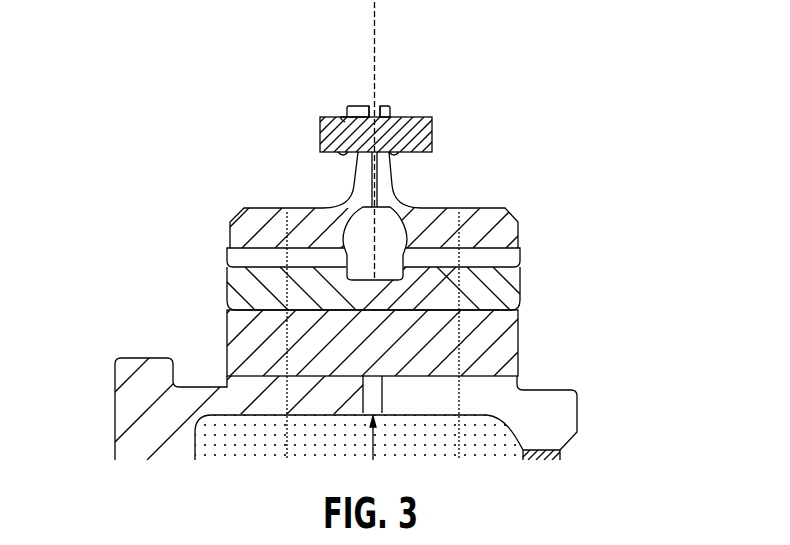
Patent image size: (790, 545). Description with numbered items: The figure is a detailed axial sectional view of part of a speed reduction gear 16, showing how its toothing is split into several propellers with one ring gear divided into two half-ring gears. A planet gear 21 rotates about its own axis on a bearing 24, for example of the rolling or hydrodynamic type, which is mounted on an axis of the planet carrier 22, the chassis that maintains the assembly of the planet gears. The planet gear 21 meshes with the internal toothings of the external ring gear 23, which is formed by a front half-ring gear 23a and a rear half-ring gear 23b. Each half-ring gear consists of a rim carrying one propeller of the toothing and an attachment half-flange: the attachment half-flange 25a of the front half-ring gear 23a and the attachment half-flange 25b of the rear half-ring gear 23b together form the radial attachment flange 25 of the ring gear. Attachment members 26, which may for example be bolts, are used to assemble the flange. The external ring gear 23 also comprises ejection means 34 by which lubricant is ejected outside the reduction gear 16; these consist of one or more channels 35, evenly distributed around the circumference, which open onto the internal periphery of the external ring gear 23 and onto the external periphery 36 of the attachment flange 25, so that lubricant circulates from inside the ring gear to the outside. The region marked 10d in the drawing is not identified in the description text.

The reduction gear 16 is at (647, 188).
The planet gear 21 is at (508, 287).
The planet carrier 22 is at (133, 412).
The external ring gear 23 is at (367, 203).
The front half-ring gear 23a is at (247, 228).
The rear half-ring gear 23b is at (503, 236).
The bearing 24 is at (505, 347).
The attachment flange 25 is at (349, 114).
The attachment half-flange 25a is at (367, 105).
The attachment half-flange 25b is at (393, 116).
The attachment members 26 is at (441, 125).
The ejection means 34 is at (384, 175).
The channel 35 is at (360, 118).
The external periphery 36 is at (384, 100).
The housing wall 10d is at (383, 390).